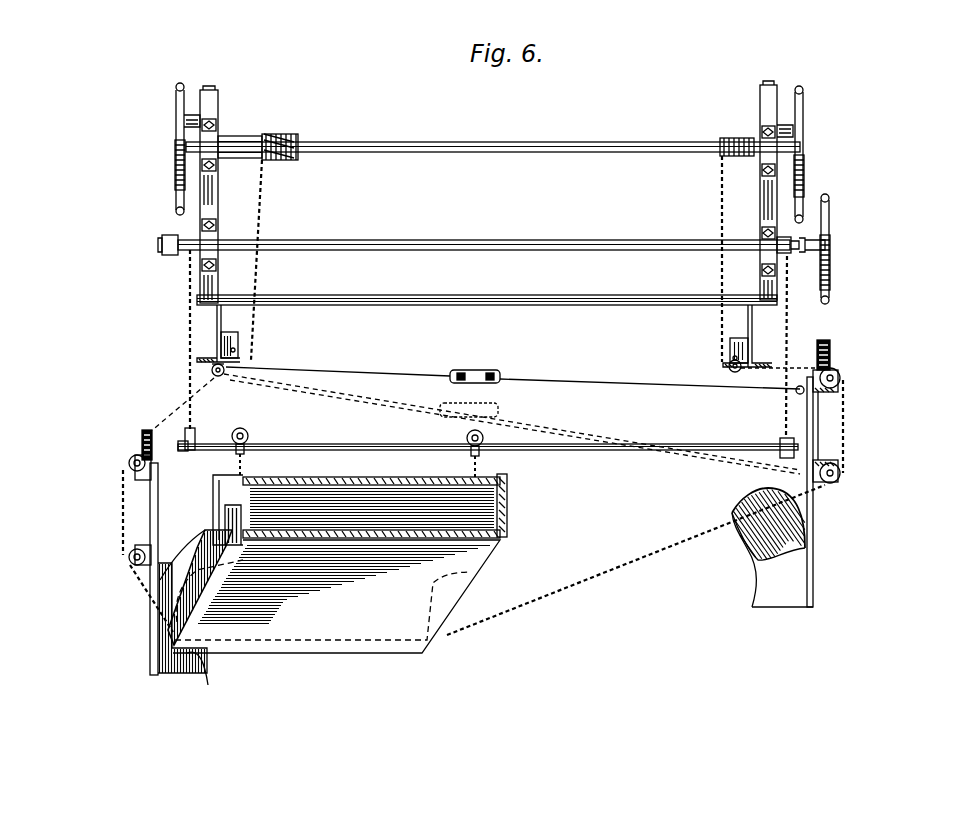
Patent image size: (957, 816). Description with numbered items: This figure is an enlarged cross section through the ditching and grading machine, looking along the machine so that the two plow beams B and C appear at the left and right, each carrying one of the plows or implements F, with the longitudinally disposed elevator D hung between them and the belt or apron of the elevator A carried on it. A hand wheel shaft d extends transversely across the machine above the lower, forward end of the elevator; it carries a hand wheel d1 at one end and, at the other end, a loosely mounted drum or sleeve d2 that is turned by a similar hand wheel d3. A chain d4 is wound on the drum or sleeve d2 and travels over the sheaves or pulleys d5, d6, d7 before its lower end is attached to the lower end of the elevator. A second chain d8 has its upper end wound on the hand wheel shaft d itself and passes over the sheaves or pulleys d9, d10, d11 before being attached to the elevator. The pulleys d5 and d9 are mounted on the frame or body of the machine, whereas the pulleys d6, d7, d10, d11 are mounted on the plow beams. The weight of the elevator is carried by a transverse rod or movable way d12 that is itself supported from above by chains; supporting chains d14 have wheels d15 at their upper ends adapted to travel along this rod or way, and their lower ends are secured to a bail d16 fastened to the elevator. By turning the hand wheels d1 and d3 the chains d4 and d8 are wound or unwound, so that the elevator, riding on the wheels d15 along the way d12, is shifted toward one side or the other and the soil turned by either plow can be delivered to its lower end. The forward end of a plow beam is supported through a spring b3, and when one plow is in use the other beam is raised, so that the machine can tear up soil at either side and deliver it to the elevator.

The elevator A is at (218, 328).
The plow beam B is at (814, 430).
The plow beam C is at (831, 253).
The elevator D is at (360, 642).
The plows or implements F is at (778, 568).
The spring b3 is at (831, 352).
The hand wheel shaft d is at (489, 146).
The hand wheel d1 is at (804, 186).
The drum or sleeve d2 is at (253, 137).
The hand wheel d3 is at (178, 114).
The chain d4 is at (228, 378).
The sheave or pulley d5 is at (245, 358).
The sheave or pulley d6 is at (130, 465).
The sheave or pulley d7 is at (130, 556).
The chain d8 is at (728, 342).
The sheave or pulley d9 is at (738, 373).
The sheave or pulley d10 is at (840, 379).
The sheave or pulley d11 is at (840, 476).
The transverse rod or movable way d12 is at (818, 326).
The supporting chains d14 is at (244, 466).
The wheels d15 is at (247, 433).
The bail d16 is at (406, 480).